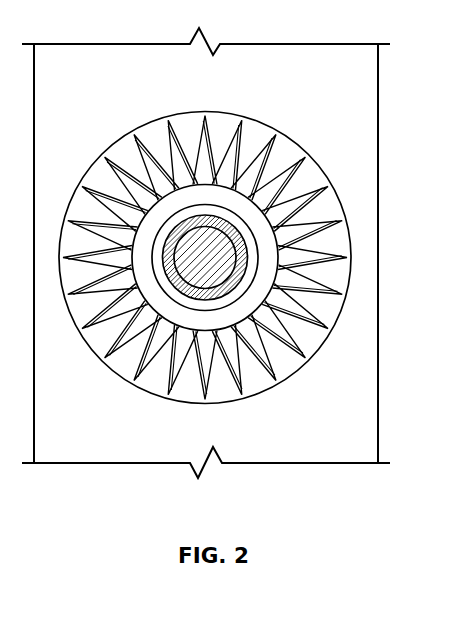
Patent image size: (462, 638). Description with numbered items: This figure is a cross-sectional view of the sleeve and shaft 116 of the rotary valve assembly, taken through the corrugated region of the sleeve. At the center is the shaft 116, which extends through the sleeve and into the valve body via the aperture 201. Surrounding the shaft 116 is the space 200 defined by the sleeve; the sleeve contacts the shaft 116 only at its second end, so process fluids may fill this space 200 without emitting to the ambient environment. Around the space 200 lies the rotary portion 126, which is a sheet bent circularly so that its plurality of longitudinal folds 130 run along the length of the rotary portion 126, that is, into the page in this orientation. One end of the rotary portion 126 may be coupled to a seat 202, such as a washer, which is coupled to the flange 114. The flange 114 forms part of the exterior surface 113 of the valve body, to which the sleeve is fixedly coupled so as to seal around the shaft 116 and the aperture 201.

The exterior surface 113 is at (223, 81).
The flange 114 is at (283, 90).
The shaft 116 is at (342, 292).
The rotary portion 126 is at (247, 258).
The longitudinal folds 130 is at (243, 383).
The space 200 is at (243, 205).
The aperture 201 is at (180, 213).
The seat 202 is at (305, 187).